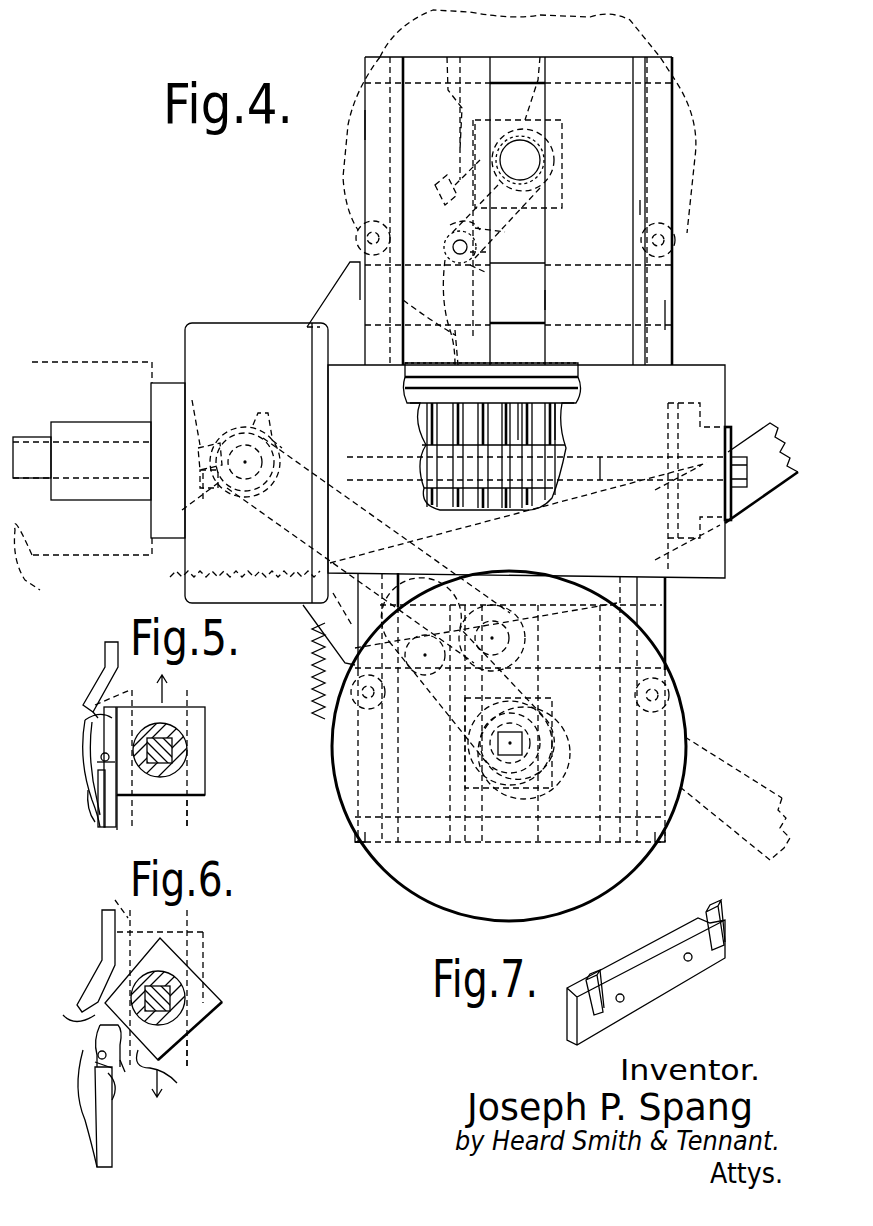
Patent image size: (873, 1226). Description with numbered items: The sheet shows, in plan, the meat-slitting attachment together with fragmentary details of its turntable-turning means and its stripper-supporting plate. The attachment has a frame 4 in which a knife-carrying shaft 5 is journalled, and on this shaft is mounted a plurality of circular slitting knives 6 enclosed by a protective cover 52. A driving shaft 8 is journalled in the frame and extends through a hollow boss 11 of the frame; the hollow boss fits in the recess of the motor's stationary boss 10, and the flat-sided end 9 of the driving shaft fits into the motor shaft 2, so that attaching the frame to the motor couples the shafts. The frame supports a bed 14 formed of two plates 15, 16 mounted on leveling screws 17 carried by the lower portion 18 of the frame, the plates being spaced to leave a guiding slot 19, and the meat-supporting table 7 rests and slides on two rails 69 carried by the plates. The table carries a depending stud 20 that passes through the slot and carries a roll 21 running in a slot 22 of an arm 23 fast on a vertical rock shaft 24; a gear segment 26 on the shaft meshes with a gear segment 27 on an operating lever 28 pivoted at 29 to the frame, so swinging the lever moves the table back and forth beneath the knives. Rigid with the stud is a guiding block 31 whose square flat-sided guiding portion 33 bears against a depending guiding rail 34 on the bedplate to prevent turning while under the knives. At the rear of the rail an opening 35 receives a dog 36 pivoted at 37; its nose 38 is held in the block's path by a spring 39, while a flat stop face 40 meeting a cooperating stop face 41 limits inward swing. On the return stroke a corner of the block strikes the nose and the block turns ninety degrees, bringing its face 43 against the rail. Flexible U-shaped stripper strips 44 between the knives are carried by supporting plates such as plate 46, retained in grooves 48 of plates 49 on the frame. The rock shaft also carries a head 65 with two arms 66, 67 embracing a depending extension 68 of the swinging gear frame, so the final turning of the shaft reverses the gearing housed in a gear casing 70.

In FIG. 4, the motor shaft 2 is at (32, 558).
In FIG. 4, the frame 4 is at (355, 832).
In FIG. 4, the knife-carrying shaft 5 is at (590, 458).
In FIG. 4, the circular slitting knives 6 is at (440, 403).
In FIG. 4, the meat-supporting table 7 is at (695, 172).
In FIG. 4, the driving shaft 8 is at (120, 490).
In FIG. 4, the flat-sided end 9 is at (22, 440).
In FIG. 4, the stationary hub element or boss 10 is at (83, 365).
In FIG. 4, the hollow boss 11 is at (105, 430).
In FIG. 4, the bed 14 is at (668, 312).
In FIG. 4, the plate 15 is at (620, 112).
In FIG. 5, the plate 15 is at (190, 702).
In FIG. 6, the plate 15 is at (205, 930).
In FIG. 4, the plate 16 is at (420, 120).
In FIG. 5, the plate 16 is at (92, 706).
In FIG. 6, the plate 16 is at (120, 908).
In FIG. 4, the leveling screws 17 is at (365, 238).
In FIG. 4, the lower portion of the frame 18 is at (678, 282).
In FIG. 4, the guiding slot 19 is at (545, 298).
In FIG. 5, the guiding slot 19 is at (190, 818).
In FIG. 6, the guiding slot 19 is at (190, 1052).
In FIG. 4, the depending stud 20 is at (500, 752).
In FIG. 5, the depending stud 20 is at (175, 745).
In FIG. 6, the depending stud 20 is at (175, 990).
In FIG. 4, the roll 21 is at (558, 770).
In FIG. 4, the slot 22 is at (450, 712).
In FIG. 4, the arm 23 is at (303, 640).
In FIG. 4, the vertical rock shaft 24 is at (245, 448).
In FIG. 4, the gear segment 26 is at (175, 565).
In FIG. 4, the gear segment 27 is at (328, 688).
In FIG. 4, the operating lever 28 is at (768, 428).
In FIG. 4, the pivot 29 is at (528, 640).
In FIG. 4, the guiding block 31 is at (552, 750).
In FIG. 4, the flat-sided guiding portion 33 is at (562, 180).
In FIG. 5, the flat-sided guiding portion 33 is at (207, 765).
In FIG. 6, the flat-sided guiding portion 33 is at (224, 1008).
In FIG. 4, the depending guiding rail 34 is at (440, 528).
In FIG. 5, the depending guiding rail 34 is at (105, 650).
In FIG. 6, the depending guiding rail 34 is at (102, 920).
In FIG. 4, the opening 35 is at (452, 180).
In FIG. 5, the opening 35 is at (95, 700).
In FIG. 6, the opening 35 is at (63, 1015).
In FIG. 4, the dog 36 is at (455, 225).
In FIG. 5, the dog 36 is at (103, 740).
In FIG. 6, the dog 36 is at (100, 1032).
In FIG. 4, the pivot 37 is at (452, 243).
In FIG. 5, the pivot 37 is at (103, 757).
In FIG. 6, the pivot 37 is at (98, 1055).
In FIG. 4, the nose 38 is at (505, 235).
In FIG. 5, the nose 38 is at (97, 720).
In FIG. 6, the nose 38 is at (125, 1072).
In FIG. 4, the spring 39 is at (448, 290).
In FIG. 5, the spring 39 is at (95, 807).
In FIG. 6, the spring 39 is at (82, 1100).
In FIG. 4, the flat stop face 40 is at (490, 251).
In FIG. 5, the flat stop face 40 is at (115, 762).
In FIG. 6, the flat stop face 40 is at (95, 1063).
In FIG. 4, the cooperating stop face 41 is at (485, 272).
In FIG. 5, the cooperating stop face 41 is at (110, 777).
In FIG. 6, the cooperating stop face 41 is at (115, 1095).
In FIG. 4, the face of the block 43 is at (545, 222).
In FIG. 5, the face of the block 43 is at (165, 797).
In FIG. 6, the face of the block 43 is at (177, 1083).
In FIG. 4, the flexible U-shaped strips 44 is at (553, 403).
In FIG. 4, the supporting plate 46 is at (520, 403).
In FIG. 7, the grooves 48 is at (586, 1010).
In FIG. 7, the plate 49 is at (672, 985).
In FIG. 4, the protective cover 52 is at (603, 385).
In FIG. 4, the head 65 is at (278, 447).
In FIG. 4, the arm or projection 66 is at (215, 488).
In FIG. 4, the arm or projection 67 is at (270, 430).
In FIG. 4, the depending extension 68 is at (215, 448).
In FIG. 4, the rails 69 is at (640, 202).
In FIG. 4, the gear casing 70 is at (243, 347).